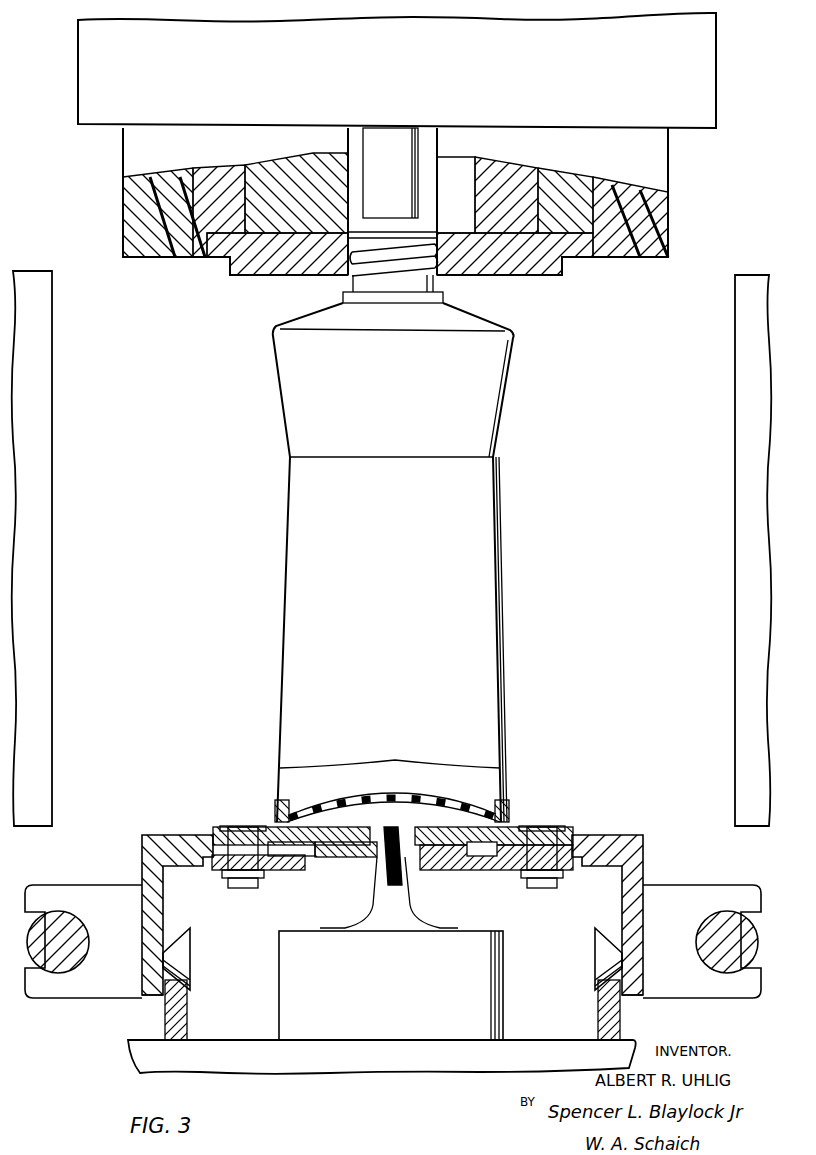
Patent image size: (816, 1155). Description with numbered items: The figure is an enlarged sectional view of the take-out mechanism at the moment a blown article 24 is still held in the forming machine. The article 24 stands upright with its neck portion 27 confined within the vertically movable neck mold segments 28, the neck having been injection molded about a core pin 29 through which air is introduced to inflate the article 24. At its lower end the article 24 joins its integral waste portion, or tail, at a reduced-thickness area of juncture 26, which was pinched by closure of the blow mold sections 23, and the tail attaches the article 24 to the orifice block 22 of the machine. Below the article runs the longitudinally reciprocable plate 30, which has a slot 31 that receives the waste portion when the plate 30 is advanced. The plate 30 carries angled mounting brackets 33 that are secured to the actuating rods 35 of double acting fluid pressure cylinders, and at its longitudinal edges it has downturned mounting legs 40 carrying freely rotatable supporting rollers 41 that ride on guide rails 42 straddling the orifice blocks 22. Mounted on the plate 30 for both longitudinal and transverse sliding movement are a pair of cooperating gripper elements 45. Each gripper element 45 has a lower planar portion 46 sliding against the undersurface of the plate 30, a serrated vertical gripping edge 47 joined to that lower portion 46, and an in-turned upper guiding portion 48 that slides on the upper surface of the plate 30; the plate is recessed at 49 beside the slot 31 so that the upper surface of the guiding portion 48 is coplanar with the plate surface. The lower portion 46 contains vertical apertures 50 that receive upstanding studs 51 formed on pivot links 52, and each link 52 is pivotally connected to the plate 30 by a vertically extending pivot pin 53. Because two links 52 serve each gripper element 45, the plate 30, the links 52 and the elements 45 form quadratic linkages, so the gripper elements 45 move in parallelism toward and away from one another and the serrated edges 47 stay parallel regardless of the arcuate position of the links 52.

The orifice block 22 is at (368, 1045).
The blow mold section 23 is at (53, 382).
The article 24 is at (395, 420).
The area of juncture 26 is at (400, 812).
The neck portion 27 is at (370, 255).
The neck mold segment 28 is at (252, 263).
The core pin 29 is at (395, 148).
The plate 30 is at (600, 845).
The slot 31 is at (413, 837).
The angled mounting bracket 33 is at (55, 890).
The actuating rod 35 is at (72, 958).
The mounting leg 40 is at (147, 995).
The supporting roller 41 is at (182, 960).
The guide rail 42 is at (177, 1017).
The gripper element 45 is at (445, 858).
The lower planar portion 46 is at (340, 860).
The serrated vertical gripping edge 47 is at (382, 845).
The in-turned upper guiding portion 48 is at (377, 820).
The recess 49 is at (350, 823).
The vertical aperture 50 is at (287, 845).
The stud 51 is at (313, 840).
The pivot link 52 is at (290, 860).
The pivot pin 53 is at (240, 840).